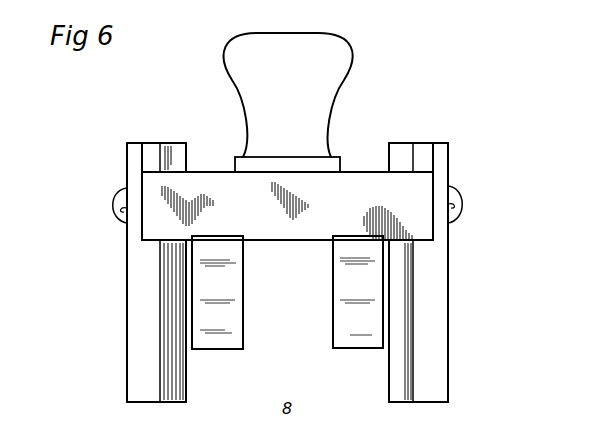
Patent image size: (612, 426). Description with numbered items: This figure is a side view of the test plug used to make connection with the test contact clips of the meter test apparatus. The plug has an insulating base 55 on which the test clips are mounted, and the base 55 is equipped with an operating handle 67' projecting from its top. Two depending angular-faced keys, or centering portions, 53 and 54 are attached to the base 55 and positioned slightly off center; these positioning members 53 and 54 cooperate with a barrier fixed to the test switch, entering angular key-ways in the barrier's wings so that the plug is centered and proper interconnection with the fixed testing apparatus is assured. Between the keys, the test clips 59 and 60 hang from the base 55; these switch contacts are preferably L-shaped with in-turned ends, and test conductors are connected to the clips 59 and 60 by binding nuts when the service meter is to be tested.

The operating handle 67' is at (302, 100).
The insulating base 55 is at (352, 175).
The positioning key 53 is at (137, 368).
The positioning key 54 is at (440, 365).
The test clip 59 is at (216, 353).
The test clip 60 is at (343, 352).